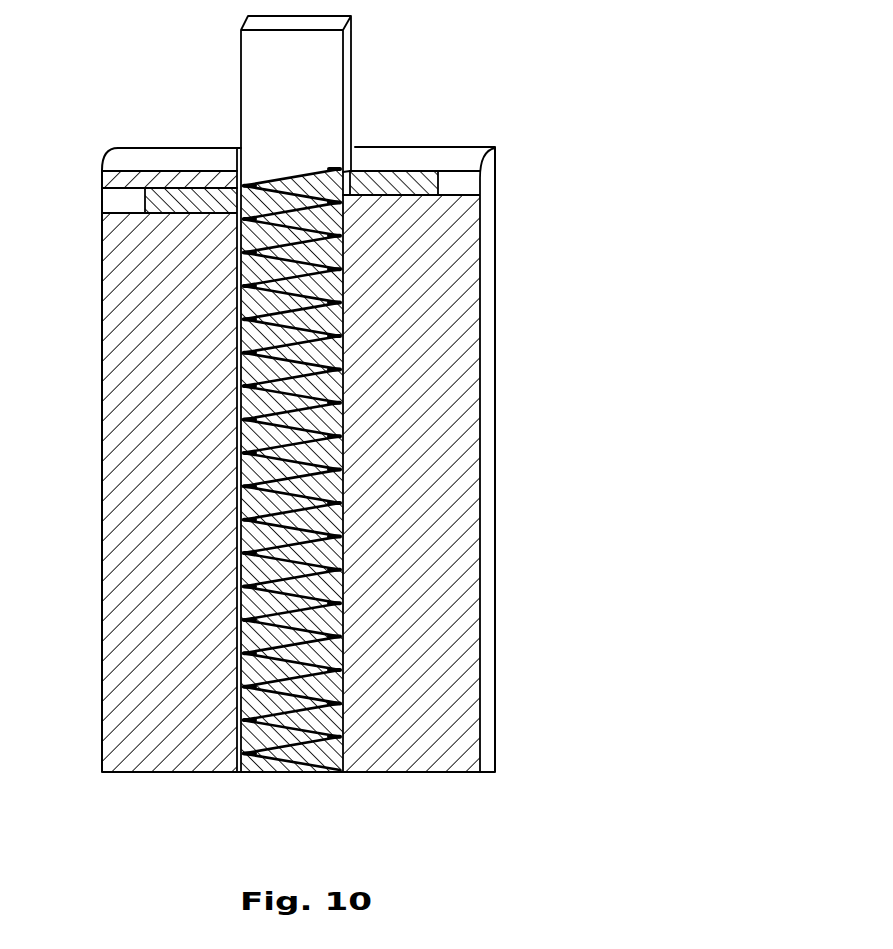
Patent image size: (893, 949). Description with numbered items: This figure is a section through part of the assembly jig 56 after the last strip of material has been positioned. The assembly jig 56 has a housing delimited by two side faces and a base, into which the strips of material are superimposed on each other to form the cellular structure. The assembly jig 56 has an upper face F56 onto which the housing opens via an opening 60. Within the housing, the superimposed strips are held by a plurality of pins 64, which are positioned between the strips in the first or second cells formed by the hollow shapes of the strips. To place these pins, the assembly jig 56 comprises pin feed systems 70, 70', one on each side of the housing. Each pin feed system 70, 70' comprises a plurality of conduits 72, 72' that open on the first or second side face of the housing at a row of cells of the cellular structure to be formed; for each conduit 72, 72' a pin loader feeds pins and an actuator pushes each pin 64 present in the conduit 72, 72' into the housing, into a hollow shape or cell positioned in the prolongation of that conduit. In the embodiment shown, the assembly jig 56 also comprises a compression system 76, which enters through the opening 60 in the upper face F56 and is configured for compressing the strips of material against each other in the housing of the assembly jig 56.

The assembly jig 56 is at (500, 102).
The opening 60 is at (355, 166).
The pins 64 is at (243, 229).
The pin feed system 70 is at (451, 460).
The pin feed system 70' is at (146, 423).
The conduits 72 is at (454, 198).
The conduits 72' is at (191, 158).
The compression system 76 is at (352, 65).
The upper face F56 is at (157, 160).